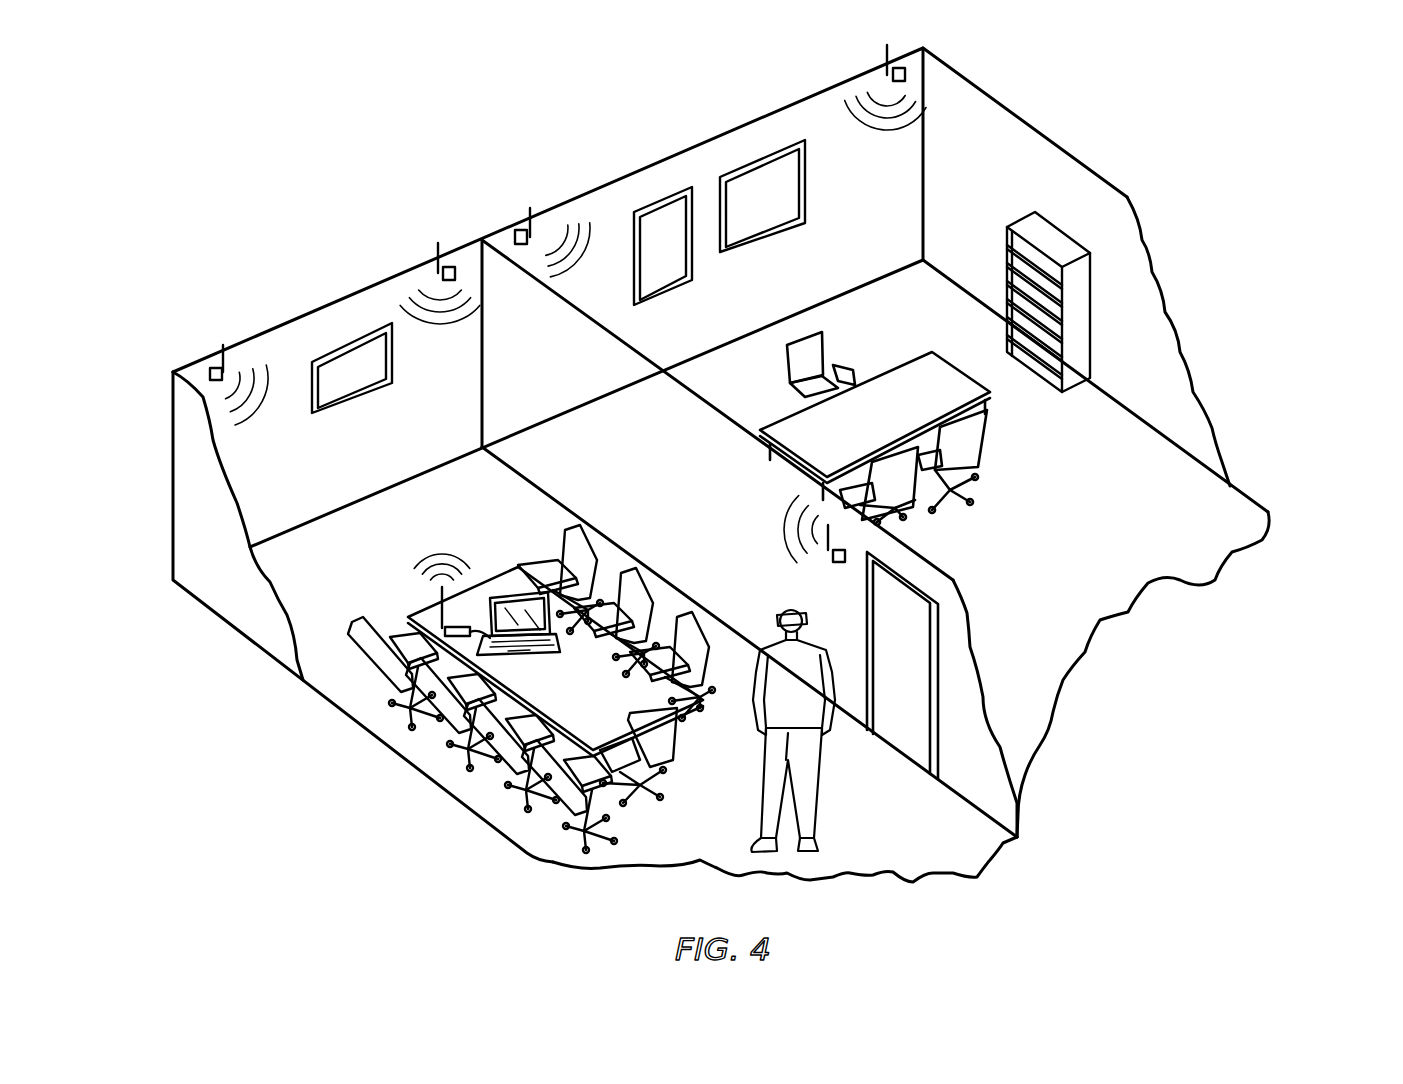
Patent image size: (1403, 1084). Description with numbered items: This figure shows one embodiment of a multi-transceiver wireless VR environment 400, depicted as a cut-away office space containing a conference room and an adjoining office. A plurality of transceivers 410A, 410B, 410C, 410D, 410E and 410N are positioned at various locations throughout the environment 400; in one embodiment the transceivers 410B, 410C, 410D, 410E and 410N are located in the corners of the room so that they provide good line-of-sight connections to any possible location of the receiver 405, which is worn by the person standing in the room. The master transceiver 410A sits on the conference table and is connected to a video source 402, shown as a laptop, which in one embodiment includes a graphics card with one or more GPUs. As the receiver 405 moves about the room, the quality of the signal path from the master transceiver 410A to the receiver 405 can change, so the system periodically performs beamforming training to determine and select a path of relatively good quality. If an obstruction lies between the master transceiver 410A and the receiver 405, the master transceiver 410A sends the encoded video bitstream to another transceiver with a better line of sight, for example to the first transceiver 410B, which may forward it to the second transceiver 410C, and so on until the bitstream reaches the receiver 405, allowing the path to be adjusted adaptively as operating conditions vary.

The multi-transceiver wireless VR environment 400 is at (1345, 112).
The video source 402 is at (550, 658).
The receiver 405 is at (781, 620).
The master transceiver 410A is at (443, 609).
The first transceiver 410B is at (217, 358).
The second transceiver 410C is at (450, 262).
The transceiver 410D is at (840, 563).
The transceiver 410E is at (522, 226).
The transceiver 410N is at (906, 70).